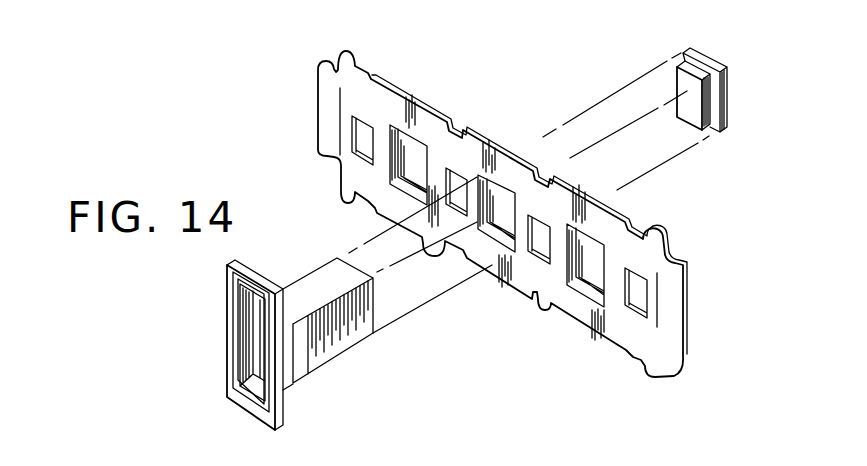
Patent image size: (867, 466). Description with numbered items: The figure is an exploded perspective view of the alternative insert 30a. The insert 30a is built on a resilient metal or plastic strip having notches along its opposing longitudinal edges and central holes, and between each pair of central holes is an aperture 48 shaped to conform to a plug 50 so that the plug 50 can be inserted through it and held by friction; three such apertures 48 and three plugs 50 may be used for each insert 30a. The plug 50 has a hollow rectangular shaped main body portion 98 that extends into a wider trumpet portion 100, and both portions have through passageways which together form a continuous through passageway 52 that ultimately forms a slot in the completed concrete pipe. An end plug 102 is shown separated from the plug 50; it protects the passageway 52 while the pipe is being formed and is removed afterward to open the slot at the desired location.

The insert 30a is at (502, 219).
The aperture 48 is at (600, 273).
The plug 50 is at (266, 298).
The through passageway 52 is at (253, 357).
The main body portion 98 is at (315, 354).
The trumpet portion 100 is at (288, 395).
The end plug 102 is at (717, 62).